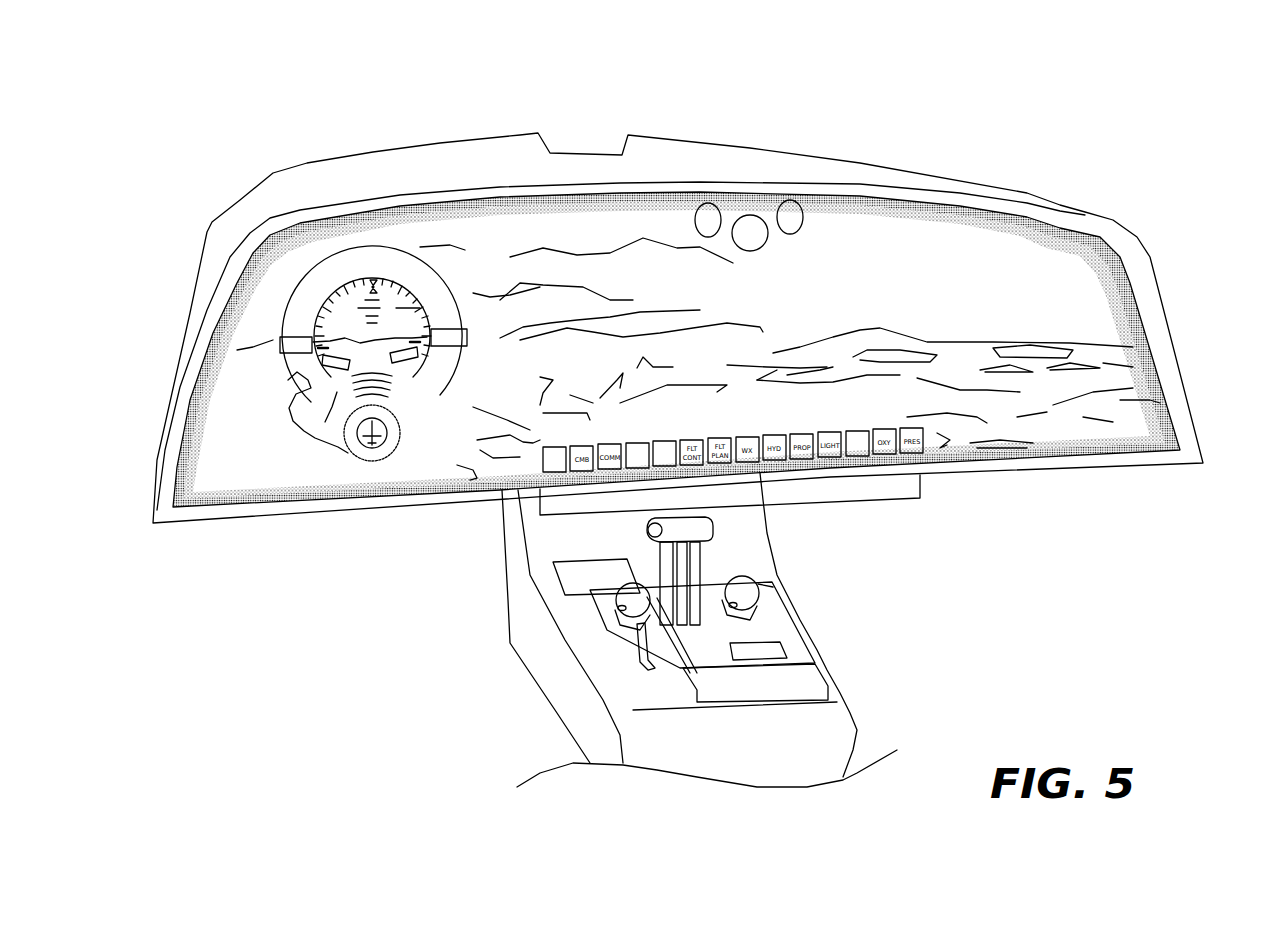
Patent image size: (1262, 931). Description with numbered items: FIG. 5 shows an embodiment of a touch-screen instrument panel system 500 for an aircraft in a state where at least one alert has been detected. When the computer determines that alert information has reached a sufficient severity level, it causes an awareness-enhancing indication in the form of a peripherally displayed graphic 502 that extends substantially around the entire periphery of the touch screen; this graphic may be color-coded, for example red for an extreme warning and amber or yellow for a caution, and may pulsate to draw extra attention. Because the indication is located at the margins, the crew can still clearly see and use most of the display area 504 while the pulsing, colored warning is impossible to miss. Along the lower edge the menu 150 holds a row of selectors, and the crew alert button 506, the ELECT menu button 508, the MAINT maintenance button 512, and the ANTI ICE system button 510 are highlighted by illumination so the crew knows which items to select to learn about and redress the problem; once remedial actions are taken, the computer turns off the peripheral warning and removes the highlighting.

The flight deck display system 500 is at (254, 87).
The peripherally displayed graphic 502 is at (1130, 293).
The display area 504 is at (1140, 403).
The crew alert button 506 is at (637, 468).
The menu button 508 is at (658, 467).
The system button 510 is at (553, 472).
The maintenance button 512 is at (850, 457).
The menu 150 is at (813, 507).